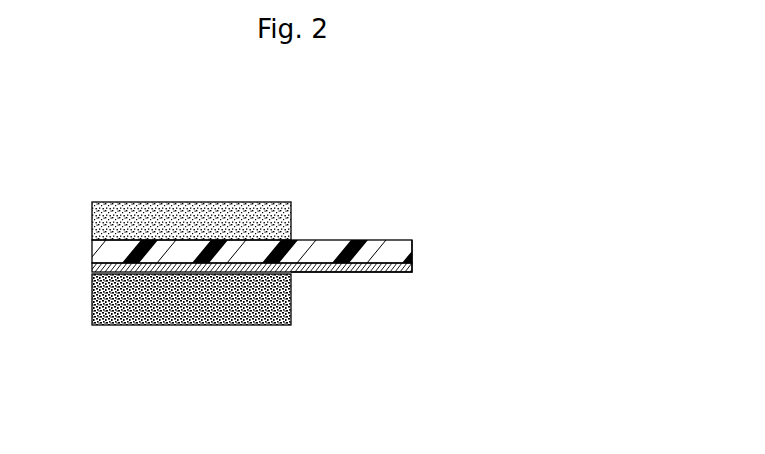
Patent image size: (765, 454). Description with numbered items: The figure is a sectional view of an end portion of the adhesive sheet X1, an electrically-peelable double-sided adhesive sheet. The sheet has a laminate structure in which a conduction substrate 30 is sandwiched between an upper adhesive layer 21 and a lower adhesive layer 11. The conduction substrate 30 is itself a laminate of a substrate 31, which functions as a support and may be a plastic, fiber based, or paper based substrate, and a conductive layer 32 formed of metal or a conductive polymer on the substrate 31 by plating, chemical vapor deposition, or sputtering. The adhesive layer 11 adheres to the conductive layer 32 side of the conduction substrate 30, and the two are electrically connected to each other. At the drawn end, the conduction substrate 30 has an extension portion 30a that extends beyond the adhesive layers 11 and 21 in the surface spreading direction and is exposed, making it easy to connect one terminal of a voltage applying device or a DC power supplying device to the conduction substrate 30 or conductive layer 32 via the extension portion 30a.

The adhesive sheet X1 is at (128, 187).
The adhesive layer 21 is at (282, 223).
The adhesive layer 11 is at (293, 302).
The conduction substrate 30 is at (306, 268).
The substrate 31 is at (412, 243).
The conductive layer 32 is at (412, 267).
The extension portion 30a is at (360, 277).